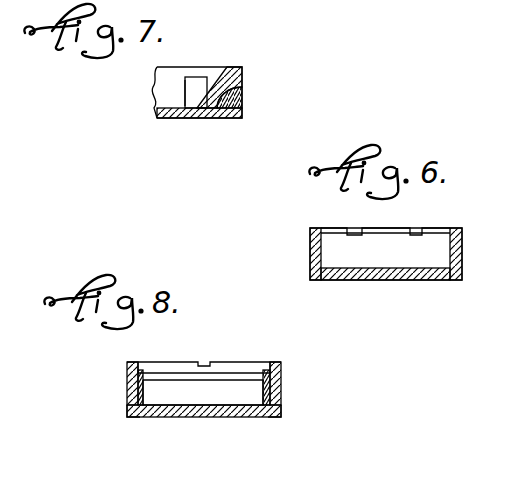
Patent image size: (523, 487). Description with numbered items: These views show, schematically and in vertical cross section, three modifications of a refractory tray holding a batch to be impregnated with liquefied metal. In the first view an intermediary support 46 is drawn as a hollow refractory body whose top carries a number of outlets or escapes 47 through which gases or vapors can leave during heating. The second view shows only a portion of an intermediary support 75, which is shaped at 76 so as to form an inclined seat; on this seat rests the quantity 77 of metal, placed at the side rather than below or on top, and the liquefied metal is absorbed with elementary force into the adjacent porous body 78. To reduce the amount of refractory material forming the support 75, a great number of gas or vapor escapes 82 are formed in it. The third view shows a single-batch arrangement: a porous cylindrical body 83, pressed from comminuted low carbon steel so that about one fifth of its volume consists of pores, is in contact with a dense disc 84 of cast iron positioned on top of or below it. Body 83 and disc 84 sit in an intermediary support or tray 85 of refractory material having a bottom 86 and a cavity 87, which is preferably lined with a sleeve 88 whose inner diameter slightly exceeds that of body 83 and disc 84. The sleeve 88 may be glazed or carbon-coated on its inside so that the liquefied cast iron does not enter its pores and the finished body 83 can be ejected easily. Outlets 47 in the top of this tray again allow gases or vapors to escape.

In FIG. 6, the intermediary support 46 is at (462, 281).
In FIG. 6, the outlets or escapes 47 is at (352, 229).
In FIG. 8, the outlets or escapes 47 is at (205, 362).
In FIG. 7, the intermediary support 75 is at (160, 76).
In FIG. 7, the inclined seat 76 is at (218, 82).
In FIG. 7, the quantity of metal 77 is at (199, 106).
In FIG. 7, the porous body 78 is at (188, 87).
In FIG. 7, the gas or vapor escapes 82 is at (230, 113).
In FIG. 8, the cylindrical body 83 is at (211, 401).
In FIG. 8, the dense disc 84 is at (162, 373).
In FIG. 8, the intermediary support or tray 85 is at (136, 390).
In FIG. 8, the bottom 86 is at (207, 418).
In FIG. 8, the cavity 87 is at (276, 393).
In FIG. 8, the sleeve or liner 88 is at (130, 418).